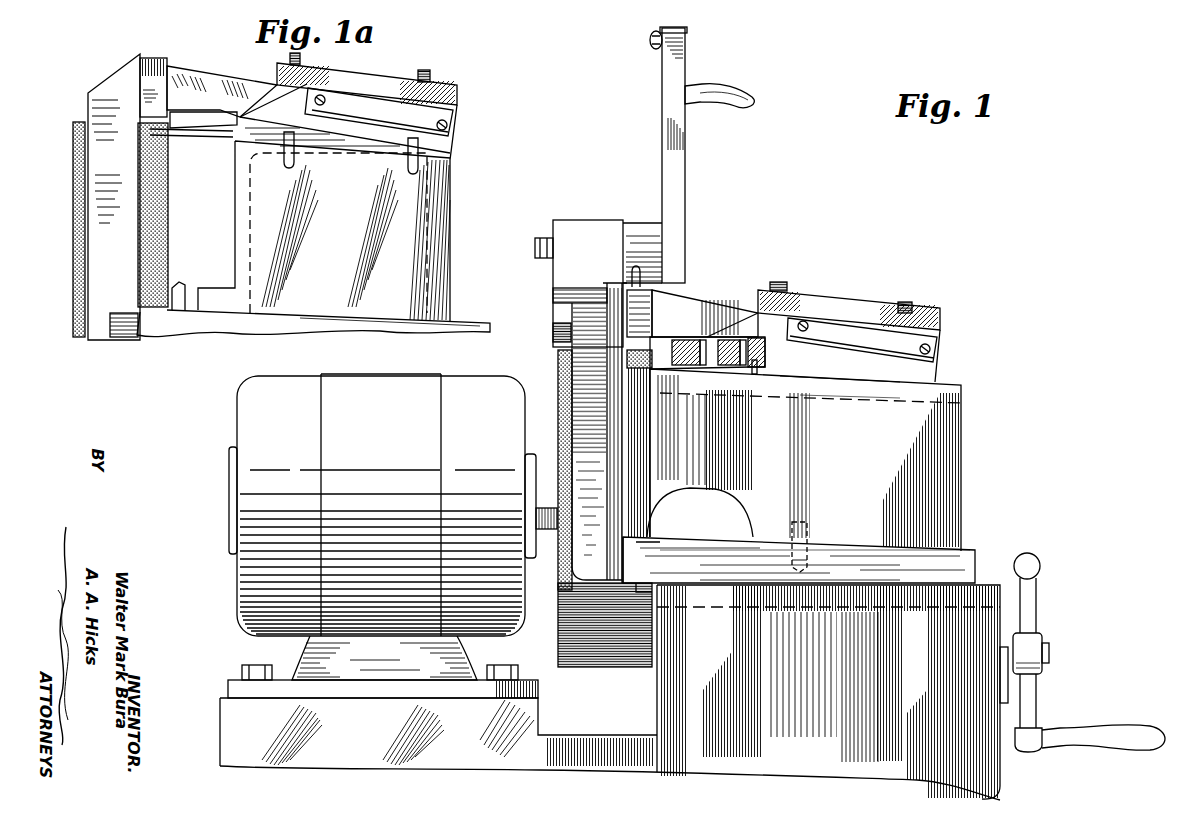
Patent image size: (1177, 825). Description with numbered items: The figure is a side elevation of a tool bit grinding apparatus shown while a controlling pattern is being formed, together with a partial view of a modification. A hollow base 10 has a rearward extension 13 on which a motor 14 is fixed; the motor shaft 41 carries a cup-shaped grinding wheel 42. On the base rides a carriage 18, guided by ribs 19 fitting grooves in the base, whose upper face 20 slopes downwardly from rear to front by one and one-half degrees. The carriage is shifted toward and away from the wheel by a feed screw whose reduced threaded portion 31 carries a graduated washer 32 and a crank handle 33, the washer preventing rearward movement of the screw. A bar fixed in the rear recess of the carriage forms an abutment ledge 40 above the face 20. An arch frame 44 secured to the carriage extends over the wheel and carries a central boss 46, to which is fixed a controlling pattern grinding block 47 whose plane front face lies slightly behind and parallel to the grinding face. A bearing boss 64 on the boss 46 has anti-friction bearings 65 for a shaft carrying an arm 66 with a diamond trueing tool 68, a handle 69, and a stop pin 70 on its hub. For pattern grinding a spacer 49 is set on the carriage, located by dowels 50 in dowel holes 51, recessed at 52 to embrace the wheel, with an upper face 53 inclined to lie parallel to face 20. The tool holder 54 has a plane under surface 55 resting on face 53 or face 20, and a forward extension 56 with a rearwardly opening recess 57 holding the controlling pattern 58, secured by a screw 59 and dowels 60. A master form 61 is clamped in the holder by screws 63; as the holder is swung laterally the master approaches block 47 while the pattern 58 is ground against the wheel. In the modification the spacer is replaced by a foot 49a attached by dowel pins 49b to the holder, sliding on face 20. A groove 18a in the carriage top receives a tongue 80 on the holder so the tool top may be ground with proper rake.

In FIG. 1, the base 10 is at (828, 692).
In FIG. 1, the rearward extension 13 is at (226, 716).
In FIG. 1, the motor 14 is at (355, 382).
In FIG. 1A, the carriage 18 is at (236, 330).
In FIG. 1, the carriage 18 is at (815, 561).
In FIG. 1, the groove 18a is at (633, 552).
In FIG. 1, the ribs 19 is at (642, 598).
In FIG. 1A, the upper face 20 is at (467, 317).
In FIG. 1, the upper face 20 is at (834, 540).
In FIG. 1, the reduced and threaded portion 31 is at (1050, 648).
In FIG. 1, the graduated washer 32 is at (1012, 609).
In FIG. 1, the crank handle 33 is at (1036, 698).
In FIG. 1A, the abutment ledge 40 is at (178, 281).
In FIG. 1, the abutment ledge 40 is at (661, 521).
In FIG. 1, the shaft 41 is at (540, 494).
In FIG. 1A, the grinding wheel 42 is at (79, 179).
In FIG. 1, the grinding wheel 42 is at (562, 376).
In FIG. 1A, the arch frame 44 is at (94, 254).
In FIG. 1, the arch frame 44 is at (582, 387).
In FIG. 1, the boss 46 is at (554, 293).
In FIG. 1A, the controlling pattern grinding block 47 is at (166, 59).
In FIG. 1, the controlling pattern grinding block 47 is at (640, 313).
In FIG. 1, the spacer 49 is at (956, 423).
In FIG. 1A, the foot 49a is at (444, 221).
In FIG. 1A, the dowel pins 49b is at (406, 170).
In FIG. 1, the dowels 50 is at (803, 522).
In FIG. 1, the dowel holes 51 is at (790, 571).
In FIG. 1, the recess 52 is at (649, 421).
In FIG. 1, the upper face 53 is at (840, 371).
In FIG. 1A, the tool holder 54 is at (469, 133).
In FIG. 1, the tool holder 54 is at (951, 334).
In FIG. 1, the under surface 55 is at (818, 384).
In FIG. 1A, the extension 56 is at (203, 118).
In FIG. 1, the extension 56 is at (554, 328).
In FIG. 1, the recess 57 is at (755, 390).
In FIG. 1A, the controlling pattern 58 is at (188, 138).
In FIG. 1, the controlling pattern 58 is at (648, 380).
In FIG. 1, the screw 59 is at (712, 366).
In FIG. 1, the dowels 60 is at (719, 351).
In FIG. 1A, the master form 61 is at (234, 82).
In FIG. 1, the master form 61 is at (712, 305).
In FIG. 1A, the screws 63 is at (302, 58).
In FIG. 1, the screws 63 is at (782, 283).
In FIG. 1, the bearing boss 64 is at (588, 218).
In FIG. 1, the anti-friction bearings 65 is at (545, 238).
In FIG. 1, the arm 66 is at (687, 42).
In FIG. 1, the diamond trueing tool 68 is at (650, 45).
In FIG. 1, the handle 69 is at (736, 92).
In FIG. 1, the stop pin 70 is at (653, 288).
In FIG. 1A, the tongue 80 is at (379, 112).
In FIG. 1, the tongue 80 is at (862, 340).